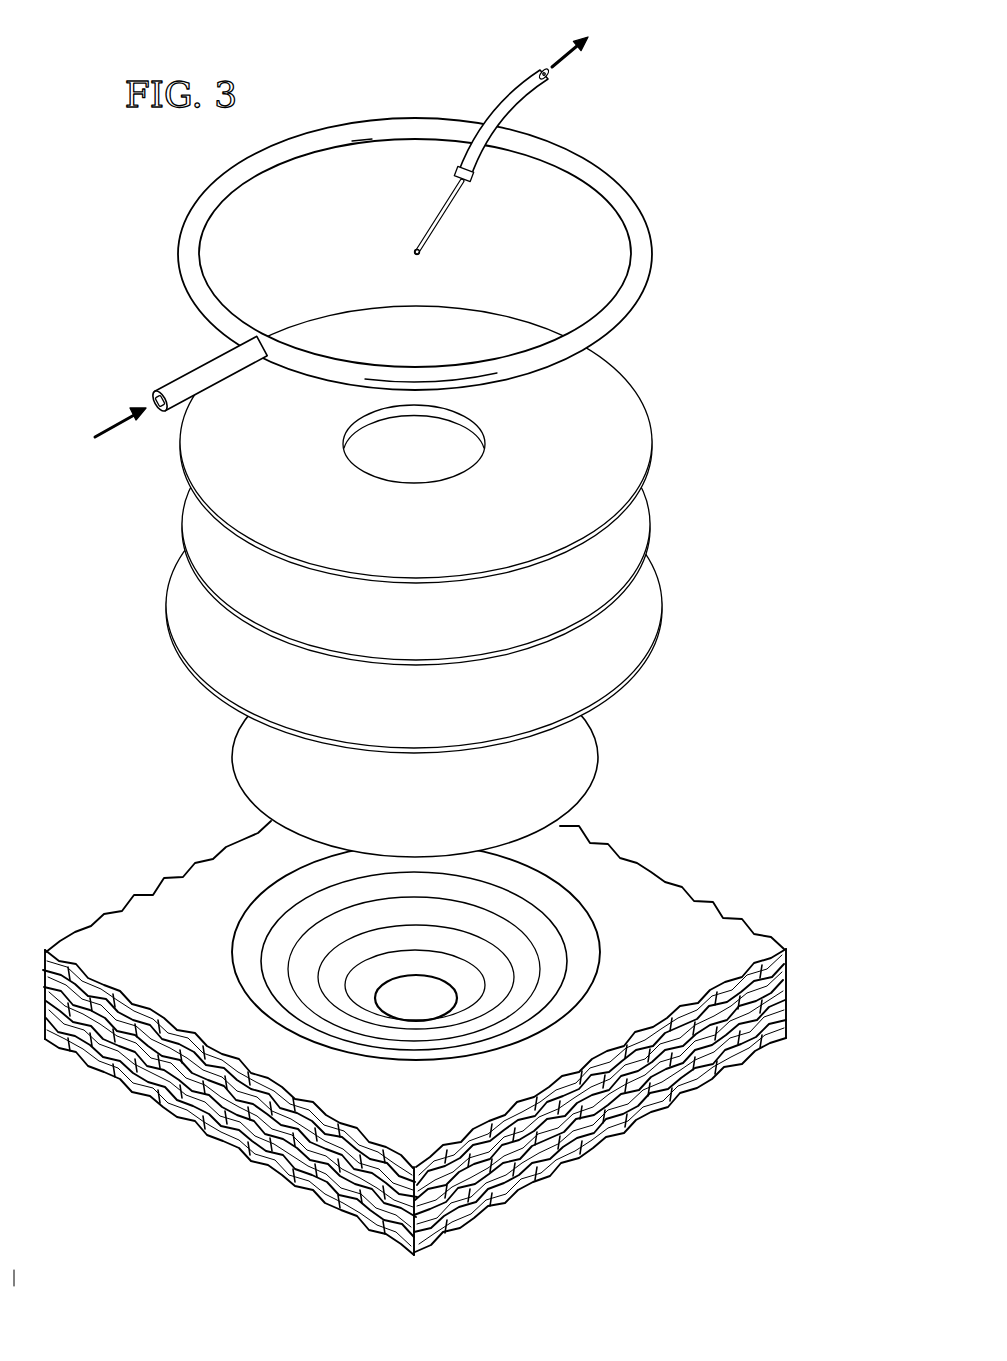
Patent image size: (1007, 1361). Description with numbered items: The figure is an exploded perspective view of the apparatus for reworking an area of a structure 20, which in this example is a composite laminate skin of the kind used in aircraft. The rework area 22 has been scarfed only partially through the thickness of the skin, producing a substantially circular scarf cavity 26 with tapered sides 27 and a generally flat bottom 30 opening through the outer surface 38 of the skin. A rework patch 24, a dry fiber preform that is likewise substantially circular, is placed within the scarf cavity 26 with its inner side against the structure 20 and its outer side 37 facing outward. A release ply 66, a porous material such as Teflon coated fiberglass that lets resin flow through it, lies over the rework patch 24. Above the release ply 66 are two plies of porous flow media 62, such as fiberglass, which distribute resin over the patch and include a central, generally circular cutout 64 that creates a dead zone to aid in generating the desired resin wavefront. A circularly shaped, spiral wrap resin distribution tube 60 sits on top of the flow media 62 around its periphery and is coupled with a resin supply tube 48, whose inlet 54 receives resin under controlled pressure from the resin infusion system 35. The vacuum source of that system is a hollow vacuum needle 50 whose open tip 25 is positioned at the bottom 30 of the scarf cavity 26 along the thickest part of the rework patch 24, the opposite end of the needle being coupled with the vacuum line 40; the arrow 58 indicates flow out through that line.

The structure 20 is at (673, 870).
The rework area 22 is at (628, 968).
The rework patch 24 is at (607, 769).
The tip 25 is at (413, 252).
The scarf cavity 26 is at (233, 952).
The tapered sides 27 is at (555, 963).
The bottom 30 is at (413, 980).
The resin infusion system 35 is at (477, 107).
The outer side 37 is at (233, 754).
The surface 38 is at (147, 897).
The vacuum line 40 is at (507, 92).
The resin supply tube 48 is at (190, 372).
The vacuum needle 50 is at (440, 212).
The inlet 54 is at (113, 411).
The outflow direction 58 is at (562, 66).
The resin distribution tube 60 is at (655, 252).
The porous flow media 62 is at (653, 446).
The cutout 64 is at (386, 480).
The release ply 66 is at (663, 608).